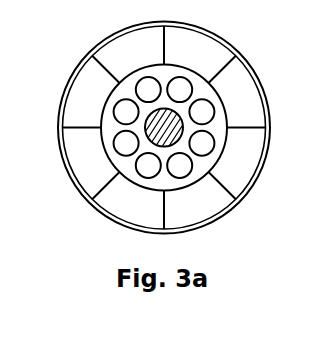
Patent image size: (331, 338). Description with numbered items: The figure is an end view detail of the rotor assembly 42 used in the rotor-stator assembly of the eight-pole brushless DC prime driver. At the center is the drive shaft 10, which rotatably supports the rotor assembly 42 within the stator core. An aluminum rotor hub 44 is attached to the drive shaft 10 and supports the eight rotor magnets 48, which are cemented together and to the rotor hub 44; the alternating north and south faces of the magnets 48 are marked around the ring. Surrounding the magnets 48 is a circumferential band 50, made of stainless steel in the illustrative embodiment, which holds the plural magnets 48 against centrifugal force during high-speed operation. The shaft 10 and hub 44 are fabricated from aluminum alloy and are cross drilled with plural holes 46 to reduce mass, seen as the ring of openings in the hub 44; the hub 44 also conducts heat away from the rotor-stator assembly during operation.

The drive shaft 10 is at (146, 126).
The rotor assembly 42 is at (77, 229).
The rotor hub 44 is at (102, 115).
The holes 46 is at (120, 74).
The rotor magnets 48 is at (168, 40).
The circumferential band 50 is at (228, 213).